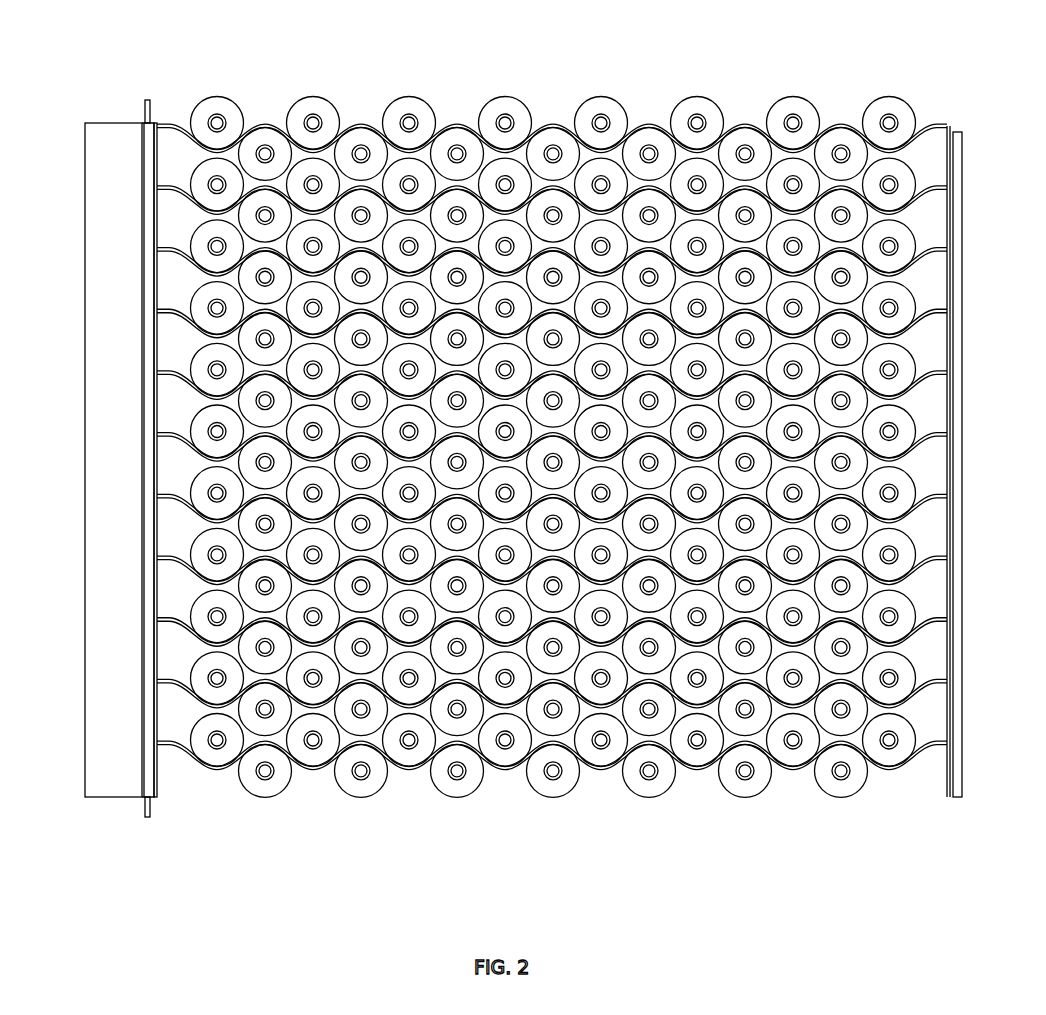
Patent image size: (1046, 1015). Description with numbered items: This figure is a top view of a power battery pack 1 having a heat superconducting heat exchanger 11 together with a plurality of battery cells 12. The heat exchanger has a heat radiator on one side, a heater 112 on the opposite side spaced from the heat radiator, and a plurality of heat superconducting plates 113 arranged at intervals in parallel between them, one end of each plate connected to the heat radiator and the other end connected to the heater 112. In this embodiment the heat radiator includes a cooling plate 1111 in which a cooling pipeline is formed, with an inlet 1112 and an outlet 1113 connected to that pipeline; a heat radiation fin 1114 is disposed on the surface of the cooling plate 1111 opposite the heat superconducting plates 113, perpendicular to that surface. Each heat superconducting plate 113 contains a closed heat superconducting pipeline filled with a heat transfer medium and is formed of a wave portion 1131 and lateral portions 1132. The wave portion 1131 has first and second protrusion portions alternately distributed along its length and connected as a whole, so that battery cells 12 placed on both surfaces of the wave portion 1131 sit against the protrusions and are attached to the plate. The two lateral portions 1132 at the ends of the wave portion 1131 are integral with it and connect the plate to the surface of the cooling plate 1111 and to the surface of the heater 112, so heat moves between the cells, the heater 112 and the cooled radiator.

The power battery pack 1 is at (128, 56).
The heat superconducting heat exchanger 11 is at (907, 880).
The battery cell 12 is at (800, 125).
The cooling plate 1111 is at (147, 757).
The inlet 1112 is at (150, 119).
The outlet 1113 is at (147, 806).
The heat radiation fin 1114 is at (92, 765).
The heater 112 is at (957, 768).
The heat superconducting plate 113 is at (552, 499).
The wave portion 1131 is at (457, 743).
The lateral portion 1132 is at (616, 785).